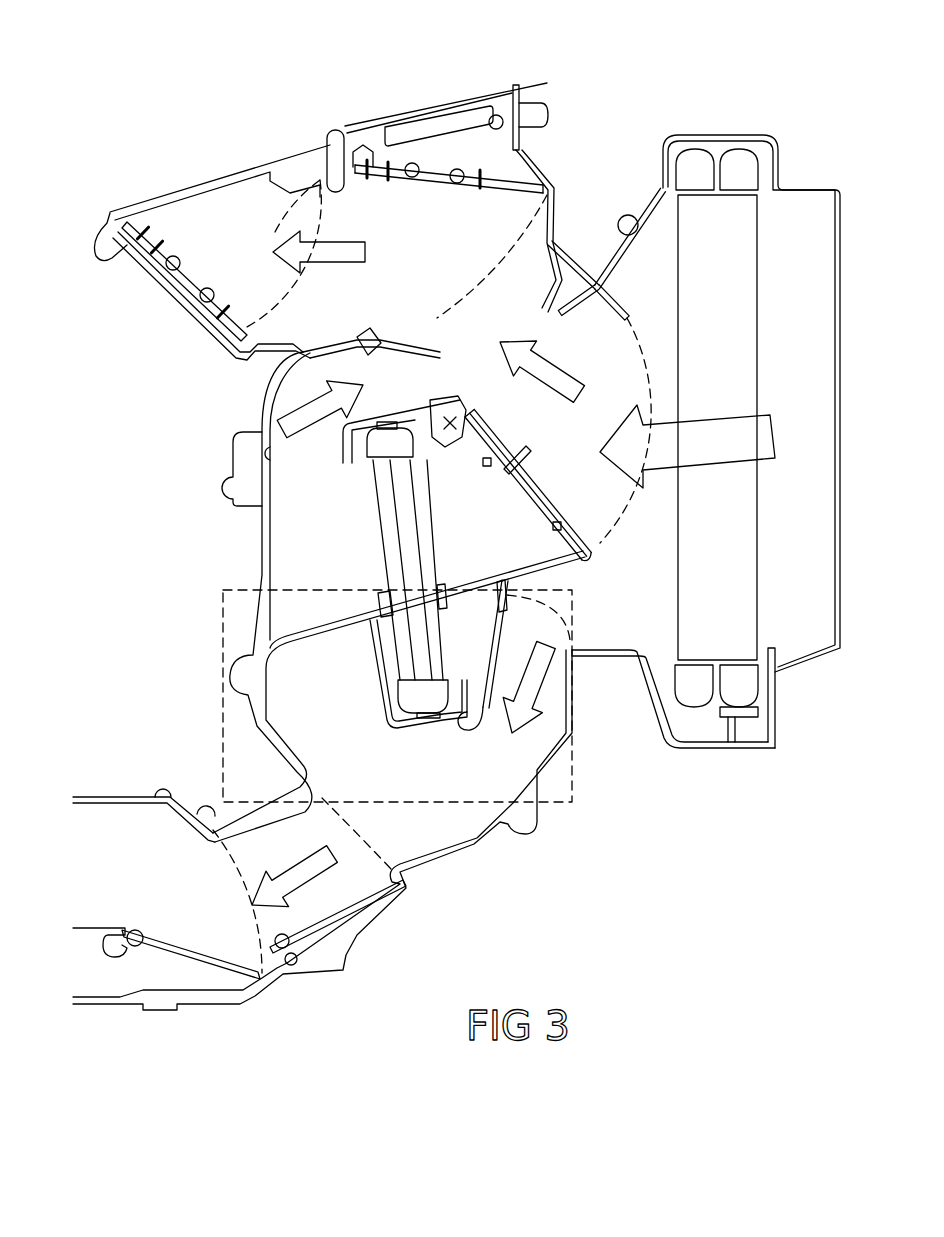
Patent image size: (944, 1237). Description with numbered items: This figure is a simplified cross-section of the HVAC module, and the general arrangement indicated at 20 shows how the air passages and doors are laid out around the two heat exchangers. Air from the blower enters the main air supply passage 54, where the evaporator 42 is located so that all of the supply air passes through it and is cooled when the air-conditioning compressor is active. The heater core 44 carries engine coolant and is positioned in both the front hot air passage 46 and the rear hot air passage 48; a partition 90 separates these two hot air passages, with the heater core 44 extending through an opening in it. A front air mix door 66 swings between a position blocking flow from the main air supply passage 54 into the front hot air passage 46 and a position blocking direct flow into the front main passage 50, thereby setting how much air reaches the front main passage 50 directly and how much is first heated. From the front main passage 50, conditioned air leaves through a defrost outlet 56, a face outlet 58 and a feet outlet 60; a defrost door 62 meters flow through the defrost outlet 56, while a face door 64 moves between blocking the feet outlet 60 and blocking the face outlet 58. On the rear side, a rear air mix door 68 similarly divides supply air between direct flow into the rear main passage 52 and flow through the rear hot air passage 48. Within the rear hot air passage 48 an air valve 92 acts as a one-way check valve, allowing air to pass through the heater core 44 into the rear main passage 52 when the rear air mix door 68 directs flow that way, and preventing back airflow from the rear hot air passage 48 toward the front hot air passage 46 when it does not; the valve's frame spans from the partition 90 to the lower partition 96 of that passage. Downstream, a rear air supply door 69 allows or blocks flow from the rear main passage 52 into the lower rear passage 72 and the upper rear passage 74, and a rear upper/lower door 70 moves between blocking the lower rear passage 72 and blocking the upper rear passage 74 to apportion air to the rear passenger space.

The HVAC module 20 is at (150, 133).
The evaporator 42 is at (733, 220).
The heater core 44 is at (382, 490).
The front hot air passage 46 is at (475, 532).
The rear hot air passage 48 is at (475, 644).
The front main passage 50 is at (365, 213).
The rear main passage 52 is at (420, 830).
The main air supply passage 54 is at (618, 227).
The defrost outlet 56 is at (455, 92).
The face outlet 58 is at (237, 157).
The feet outlet 60 is at (143, 272).
The defrost door 62 is at (470, 170).
The face door 64 is at (200, 303).
The front air mix door 66 is at (533, 485).
The rear air mix door 68 is at (505, 627).
The rear air supply door 69 is at (357, 895).
The rear upper/lower door 70 is at (203, 960).
The lower rear passage 72 is at (100, 970).
The upper rear passage 74 is at (123, 823).
The partition 90 is at (345, 615).
The air valve 92 is at (363, 650).
The lower partition 96 is at (387, 723).